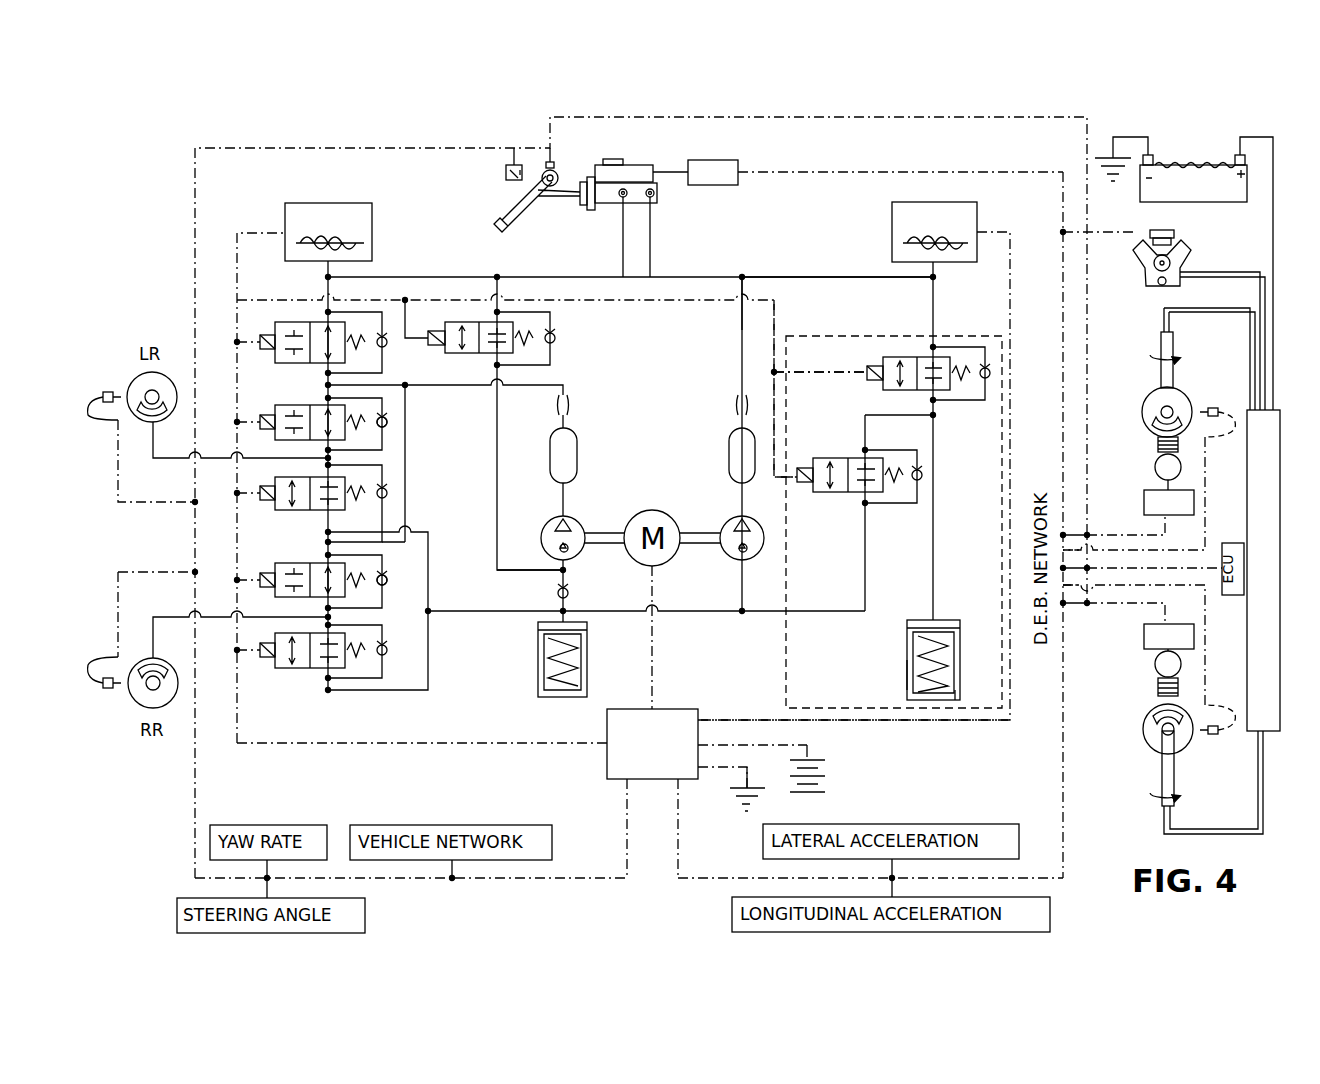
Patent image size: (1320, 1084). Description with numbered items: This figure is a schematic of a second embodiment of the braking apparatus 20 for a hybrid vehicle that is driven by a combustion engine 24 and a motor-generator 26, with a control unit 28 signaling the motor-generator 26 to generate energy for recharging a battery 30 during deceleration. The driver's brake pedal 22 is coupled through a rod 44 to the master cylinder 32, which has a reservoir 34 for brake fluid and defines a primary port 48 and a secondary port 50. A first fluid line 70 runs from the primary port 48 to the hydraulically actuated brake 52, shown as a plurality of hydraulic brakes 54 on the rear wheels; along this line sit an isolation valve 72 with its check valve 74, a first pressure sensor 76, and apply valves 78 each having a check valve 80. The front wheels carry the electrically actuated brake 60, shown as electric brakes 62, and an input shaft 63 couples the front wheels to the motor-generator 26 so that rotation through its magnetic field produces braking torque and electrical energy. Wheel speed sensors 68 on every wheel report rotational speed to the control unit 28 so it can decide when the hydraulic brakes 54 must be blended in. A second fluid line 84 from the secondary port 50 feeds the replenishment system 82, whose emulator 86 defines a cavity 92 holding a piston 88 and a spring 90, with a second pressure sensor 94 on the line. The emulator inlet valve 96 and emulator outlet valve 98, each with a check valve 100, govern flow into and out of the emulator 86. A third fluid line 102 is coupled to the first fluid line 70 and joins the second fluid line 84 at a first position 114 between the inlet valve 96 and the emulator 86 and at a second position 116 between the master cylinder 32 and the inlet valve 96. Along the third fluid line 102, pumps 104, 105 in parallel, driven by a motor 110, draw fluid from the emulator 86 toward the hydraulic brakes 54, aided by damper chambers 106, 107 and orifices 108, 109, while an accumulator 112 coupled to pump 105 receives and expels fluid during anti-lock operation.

The braking apparatus 20 is at (148, 182).
The brake pedal 22 is at (522, 215).
The combustion engine 24 is at (1186, 248).
The motor-generator 26 is at (1280, 705).
The control unit 28 is at (607, 757).
The battery 30 is at (1192, 165).
The master cylinder 32 is at (607, 207).
The reservoir 34 is at (640, 170).
The rod 44 is at (548, 190).
The primary port 48 is at (626, 197).
The secondary port 50 is at (655, 195).
The hydraulically actuated brake 52 is at (148, 510).
The hydraulic brakes 54 is at (150, 415).
The electrically actuated brake 60 is at (1148, 458).
The electric brakes 62 is at (1152, 428).
The input shaft 63 is at (1161, 380).
The wheel speed sensors 68 is at (106, 392).
The first fluid line 70 is at (326, 284).
The isolation valve 72 is at (280, 330).
The check valve 74 is at (386, 348).
The first pressure sensor 76 is at (342, 203).
The apply valves 78 is at (283, 405).
The check valve 80 is at (388, 428).
The replenishment system 82 is at (1000, 337).
The second fluid line 84 is at (862, 275).
The emulator 86 is at (907, 690).
The piston 88 is at (958, 622).
The spring 90 is at (955, 695).
The cavity 92 is at (914, 625).
The second pressure sensor 94 is at (892, 225).
The emulator inlet valve 96 is at (890, 357).
The emulator outlet valve 98 is at (820, 495).
The check valve 100 is at (990, 378).
The third fluid line 102 is at (738, 342).
The pump 104 is at (730, 562).
The pump 105 is at (555, 522).
The damper chamber 106 is at (728, 448).
The damper chamber 107 is at (577, 455).
The orifice 108 is at (730, 405).
The orifice 109 is at (555, 412).
The motor 110 is at (635, 562).
The accumulator 112 is at (538, 670).
The first position 114 is at (936, 415).
The second position 116 is at (745, 275).